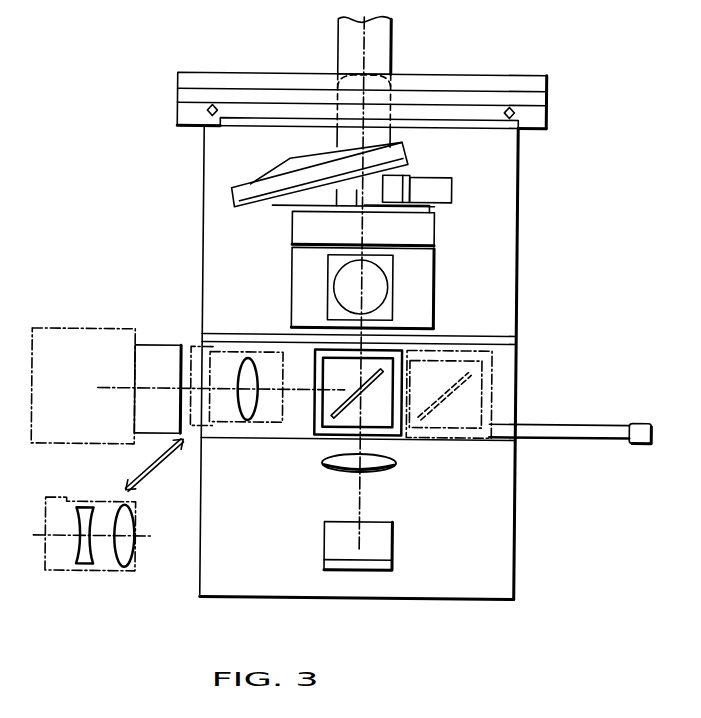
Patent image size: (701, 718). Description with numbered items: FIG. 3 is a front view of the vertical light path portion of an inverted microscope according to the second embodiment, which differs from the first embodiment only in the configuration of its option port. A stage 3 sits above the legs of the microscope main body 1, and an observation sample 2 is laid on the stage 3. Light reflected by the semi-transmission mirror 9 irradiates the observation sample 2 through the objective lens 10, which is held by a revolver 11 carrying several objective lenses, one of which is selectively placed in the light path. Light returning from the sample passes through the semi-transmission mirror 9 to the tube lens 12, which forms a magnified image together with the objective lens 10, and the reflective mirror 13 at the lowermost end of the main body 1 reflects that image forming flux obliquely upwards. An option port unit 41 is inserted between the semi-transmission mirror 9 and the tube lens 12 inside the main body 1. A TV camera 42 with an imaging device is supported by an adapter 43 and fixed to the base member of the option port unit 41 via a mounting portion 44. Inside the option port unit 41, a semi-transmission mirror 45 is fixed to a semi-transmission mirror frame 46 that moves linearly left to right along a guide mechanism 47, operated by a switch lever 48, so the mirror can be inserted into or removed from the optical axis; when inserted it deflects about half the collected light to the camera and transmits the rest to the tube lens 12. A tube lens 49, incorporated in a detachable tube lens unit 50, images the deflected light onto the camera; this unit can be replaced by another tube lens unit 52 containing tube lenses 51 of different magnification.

The microscope main body 1 is at (210, 574).
The observation sample 2 is at (383, 40).
The stage 3 is at (534, 81).
The semi-transmission mirror 9 is at (389, 310).
The objective lens 10 is at (381, 132).
The revolver 11 is at (246, 193).
The tube lens 12 is at (381, 467).
The reflective mirror 13 is at (379, 547).
The option port unit 41 is at (243, 452).
The TV camera 42 is at (73, 336).
The adapter 43 is at (157, 348).
The mounting portion 44 is at (190, 349).
The semi-transmission mirror 45 is at (467, 372).
The semi-transmission mirror frame 46 is at (381, 416).
The guide mechanism 47 is at (318, 442).
The switch lever 48 is at (641, 434).
The tube lens 49 is at (248, 356).
The tube lens unit 50 is at (215, 352).
The tube lens 51 is at (73, 576).
The tube lens unit 52 is at (57, 571).